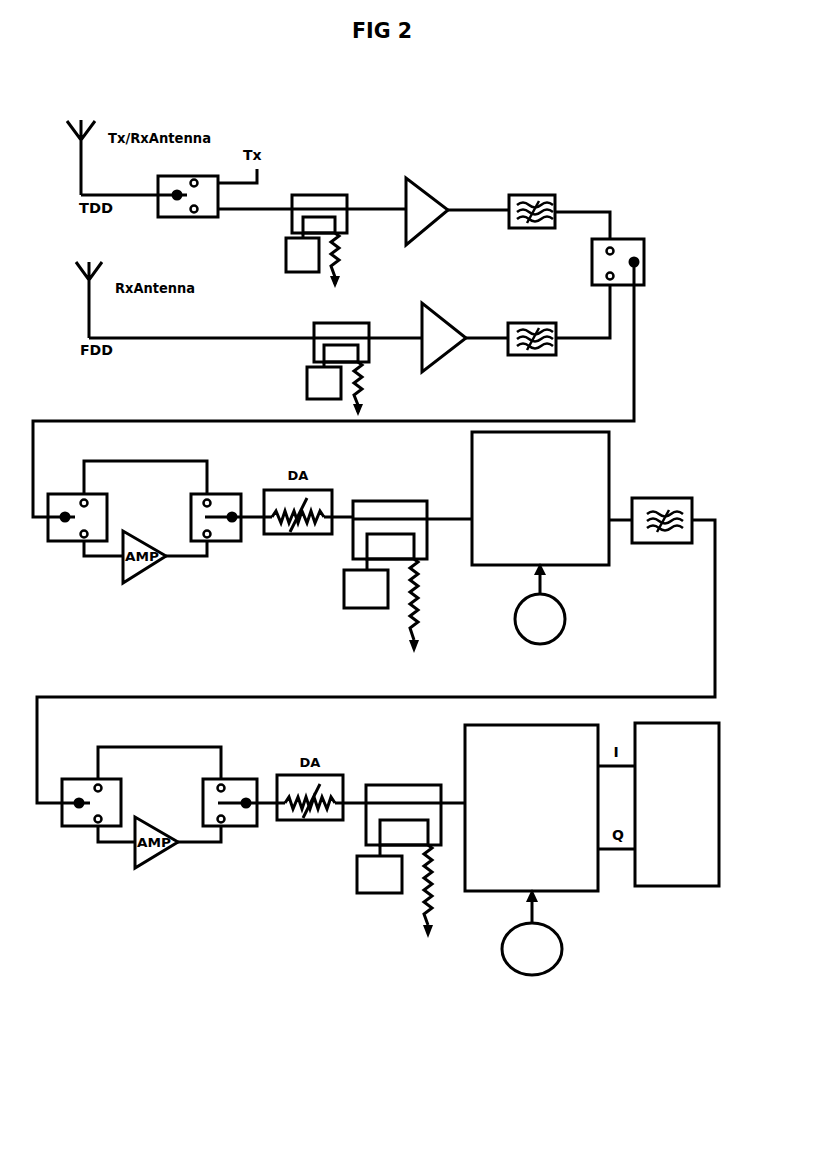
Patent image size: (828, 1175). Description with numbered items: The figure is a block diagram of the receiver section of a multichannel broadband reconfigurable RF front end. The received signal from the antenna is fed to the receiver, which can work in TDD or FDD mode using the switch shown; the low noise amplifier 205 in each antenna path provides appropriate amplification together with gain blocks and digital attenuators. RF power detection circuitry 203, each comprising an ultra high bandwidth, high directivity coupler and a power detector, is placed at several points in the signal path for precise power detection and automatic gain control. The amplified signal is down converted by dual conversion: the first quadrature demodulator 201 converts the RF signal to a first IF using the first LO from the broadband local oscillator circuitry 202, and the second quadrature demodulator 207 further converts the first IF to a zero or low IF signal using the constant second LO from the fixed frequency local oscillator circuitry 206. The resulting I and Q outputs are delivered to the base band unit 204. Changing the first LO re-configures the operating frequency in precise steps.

The quadrature demodulator 201 is at (540, 498).
The broadband local oscillator circuitry 202 is at (526, 623).
The RF power detection circuitry 203 is at (363, 566).
The base band unit 204 is at (677, 804).
The low noise amplifier 205 is at (437, 282).
The fixed frequency local oscillator circuitry 206 is at (536, 954).
The quadrature demodulator 207 is at (531, 808).